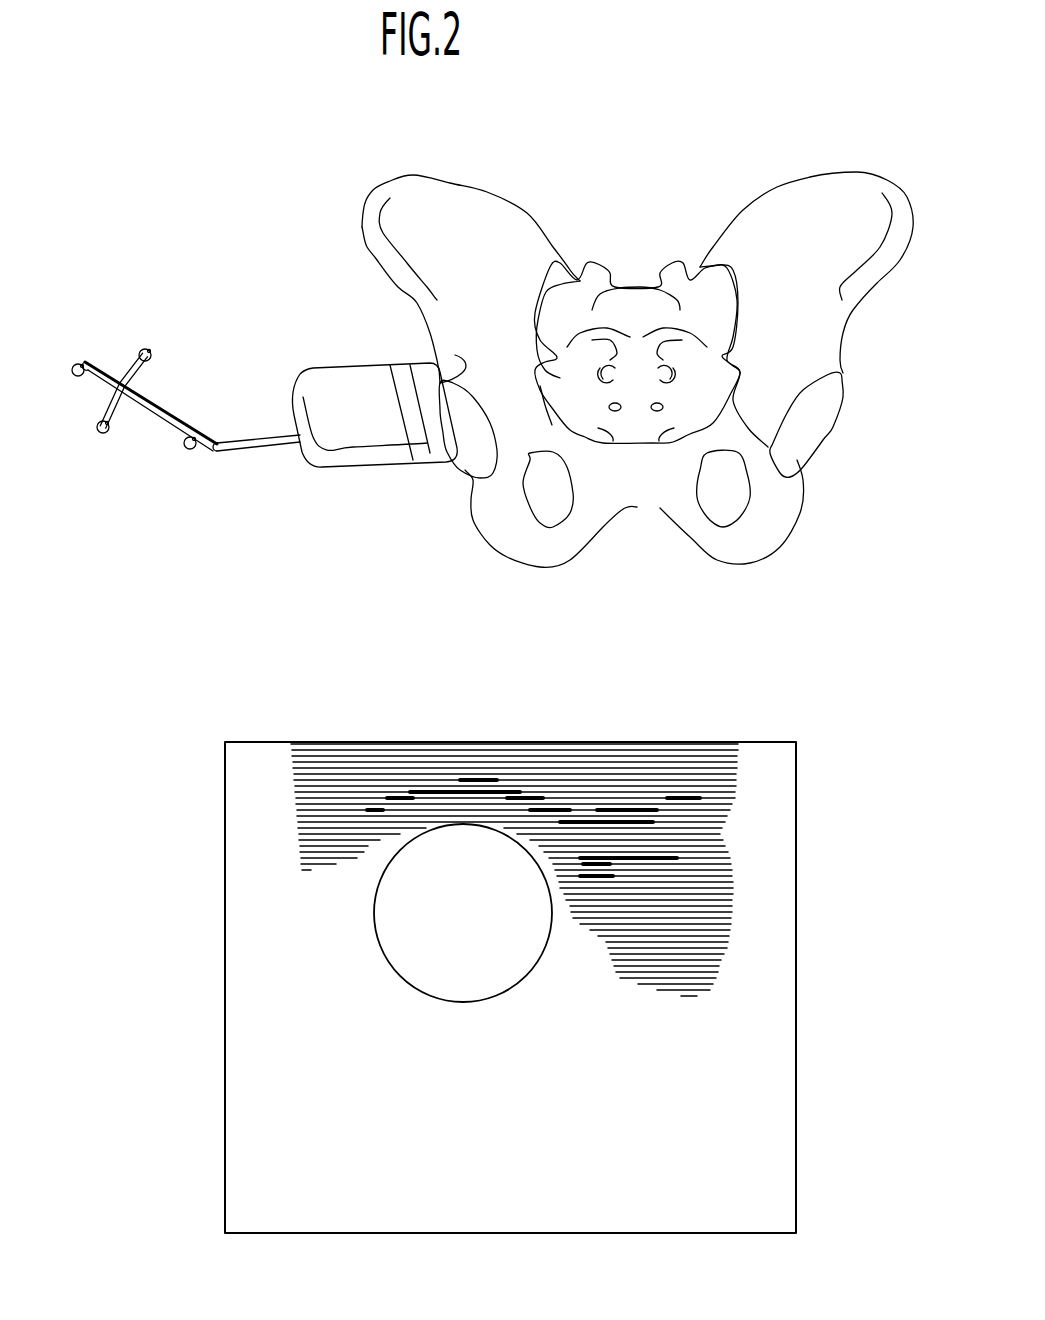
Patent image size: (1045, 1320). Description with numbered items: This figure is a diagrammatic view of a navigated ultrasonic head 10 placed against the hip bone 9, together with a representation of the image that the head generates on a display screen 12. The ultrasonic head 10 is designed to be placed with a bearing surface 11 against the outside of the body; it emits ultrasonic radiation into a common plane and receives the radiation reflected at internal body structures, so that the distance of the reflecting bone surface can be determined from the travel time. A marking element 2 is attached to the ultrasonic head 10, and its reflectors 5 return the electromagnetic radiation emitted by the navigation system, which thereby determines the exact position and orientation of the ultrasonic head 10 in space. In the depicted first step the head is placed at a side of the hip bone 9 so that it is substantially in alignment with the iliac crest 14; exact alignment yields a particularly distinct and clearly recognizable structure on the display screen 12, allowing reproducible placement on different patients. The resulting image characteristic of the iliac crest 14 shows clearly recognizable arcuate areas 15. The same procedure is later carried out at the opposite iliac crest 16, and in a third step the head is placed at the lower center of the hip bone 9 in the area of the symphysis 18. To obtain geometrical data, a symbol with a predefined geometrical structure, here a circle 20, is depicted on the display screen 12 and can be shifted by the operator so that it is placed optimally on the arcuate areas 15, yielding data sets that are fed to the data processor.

The marking element 2 is at (179, 375).
The reflectors 5 is at (78, 372).
The hip bone 9 is at (636, 337).
The ultrasonic head 10 is at (358, 425).
The bearing surface 11 is at (455, 355).
The display screen 12 is at (562, 944).
The iliac crest 14 is at (460, 467).
The arcuate areas 15 is at (430, 790).
The opposite iliac crest 16 is at (813, 422).
The symphysis 18 is at (650, 498).
The circle 20 is at (475, 1002).